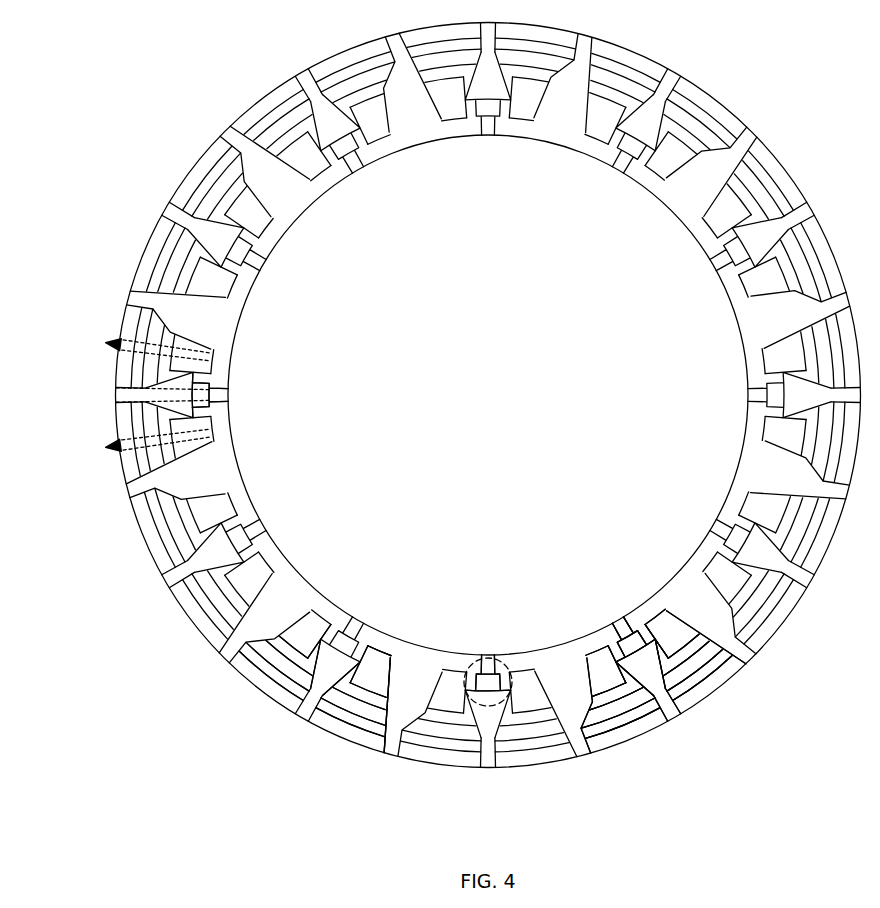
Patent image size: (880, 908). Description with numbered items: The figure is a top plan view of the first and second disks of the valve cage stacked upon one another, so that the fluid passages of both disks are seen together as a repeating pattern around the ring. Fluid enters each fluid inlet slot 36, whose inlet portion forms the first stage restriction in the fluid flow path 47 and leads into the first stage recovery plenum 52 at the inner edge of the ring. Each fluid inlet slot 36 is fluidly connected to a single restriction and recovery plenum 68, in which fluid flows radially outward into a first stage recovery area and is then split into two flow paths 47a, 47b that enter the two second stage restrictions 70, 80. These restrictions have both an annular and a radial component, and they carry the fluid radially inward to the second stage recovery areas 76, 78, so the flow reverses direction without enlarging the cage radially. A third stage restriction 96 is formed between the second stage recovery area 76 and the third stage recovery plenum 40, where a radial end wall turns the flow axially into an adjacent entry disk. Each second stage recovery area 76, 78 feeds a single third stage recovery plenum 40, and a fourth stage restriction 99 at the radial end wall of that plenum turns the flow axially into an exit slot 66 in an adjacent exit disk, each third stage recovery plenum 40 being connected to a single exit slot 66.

The fluid inlet slot 36 is at (622, 623).
The third stage recovery plenum 40 is at (370, 713).
The fluid flow path 47 is at (230, 395).
The first flow path 47a is at (128, 447).
The second flow path 47b is at (128, 348).
The first stage recovery plenum 52 is at (487, 657).
The exit slot 66 is at (700, 690).
The restriction and recovery plenum 68 is at (638, 657).
The second stage restriction 70 is at (615, 662).
The second stage recovery area 76 is at (370, 672).
The second stage recovery area 78 is at (598, 672).
The second stage restriction 80 is at (655, 642).
The third stage restriction 96 is at (363, 695).
The fourth stage restriction 99 is at (262, 667).